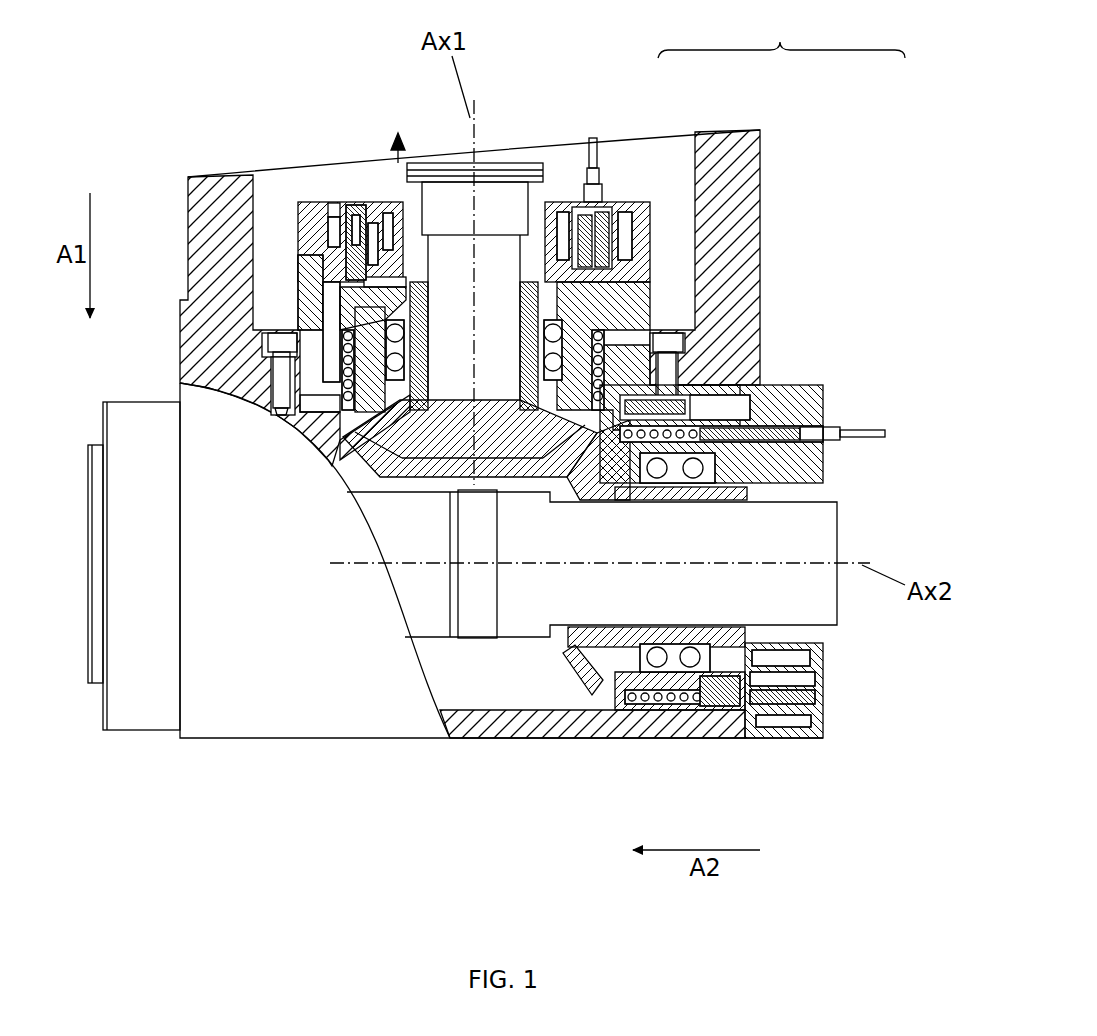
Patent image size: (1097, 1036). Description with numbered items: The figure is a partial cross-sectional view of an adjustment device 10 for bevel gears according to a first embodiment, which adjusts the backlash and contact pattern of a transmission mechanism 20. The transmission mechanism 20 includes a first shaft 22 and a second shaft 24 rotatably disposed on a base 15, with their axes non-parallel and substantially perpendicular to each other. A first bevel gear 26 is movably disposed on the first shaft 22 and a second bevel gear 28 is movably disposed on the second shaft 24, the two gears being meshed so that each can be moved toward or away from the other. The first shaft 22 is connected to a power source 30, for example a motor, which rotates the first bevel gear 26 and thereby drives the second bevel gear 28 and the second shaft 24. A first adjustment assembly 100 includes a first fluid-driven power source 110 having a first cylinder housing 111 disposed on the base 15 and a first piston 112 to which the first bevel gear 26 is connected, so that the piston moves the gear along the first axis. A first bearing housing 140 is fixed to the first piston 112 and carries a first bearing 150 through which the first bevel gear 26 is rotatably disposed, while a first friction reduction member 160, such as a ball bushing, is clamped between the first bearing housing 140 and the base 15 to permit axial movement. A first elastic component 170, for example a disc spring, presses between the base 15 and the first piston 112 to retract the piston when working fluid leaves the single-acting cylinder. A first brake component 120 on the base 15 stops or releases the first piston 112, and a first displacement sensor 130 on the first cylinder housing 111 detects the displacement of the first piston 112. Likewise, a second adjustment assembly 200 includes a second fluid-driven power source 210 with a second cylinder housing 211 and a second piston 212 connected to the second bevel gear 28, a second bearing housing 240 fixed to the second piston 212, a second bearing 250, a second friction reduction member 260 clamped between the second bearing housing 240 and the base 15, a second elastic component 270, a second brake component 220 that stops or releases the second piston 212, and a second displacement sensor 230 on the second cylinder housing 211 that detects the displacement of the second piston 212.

The adjustment device 10 is at (781, 33).
The base 15 is at (222, 195).
The transmission mechanism 20 is at (480, 660).
The first shaft 22 is at (495, 253).
The second shaft 24 is at (813, 543).
The first bevel gear 26 is at (452, 300).
The second bevel gear 28 is at (703, 500).
The power source 30 is at (514, 158).
The first adjustment assembly 100 is at (647, 172).
The first fluid-driven power source 110 is at (407, 97).
The first cylinder housing 111 is at (367, 207).
The first piston 112 is at (349, 222).
The first brake component 120 is at (325, 257).
The first displacement sensor 130 is at (593, 148).
The first bearing housing 140 is at (367, 395).
The first bearing 150 is at (345, 336).
The first friction reduction member 160 is at (353, 377).
The first elastic component 170 is at (330, 300).
The second adjustment assembly 200 is at (845, 395).
The second fluid-driven power source 210 is at (912, 655).
The second cylinder housing 211 is at (822, 682).
The second piston 212 is at (822, 698).
The second brake component 220 is at (807, 642).
The second displacement sensor 230 is at (870, 435).
The second bearing housing 240 is at (657, 670).
The second bearing 250 is at (650, 706).
The second friction reduction member 260 is at (627, 700).
The second elastic component 270 is at (718, 706).